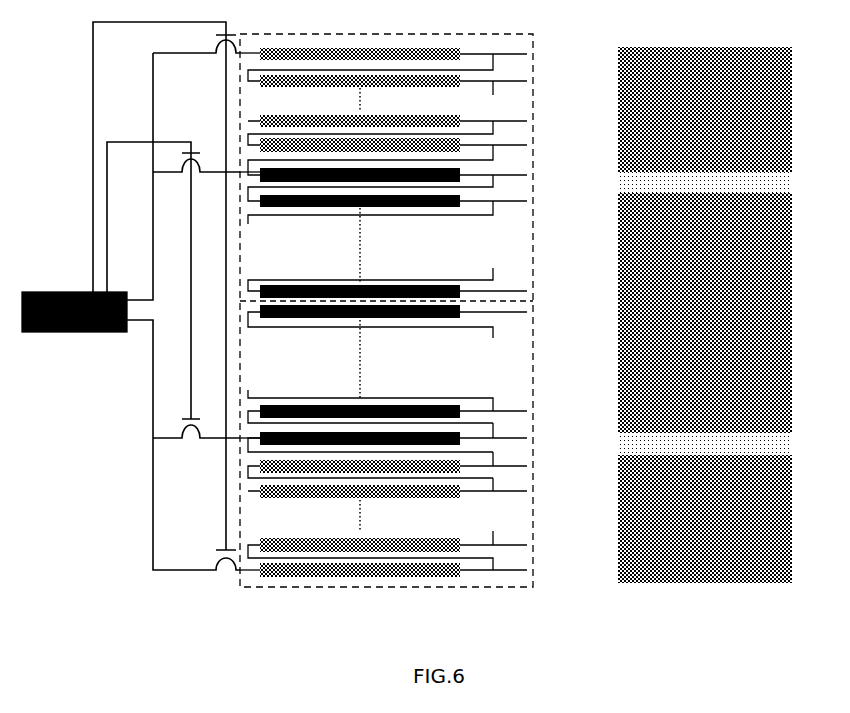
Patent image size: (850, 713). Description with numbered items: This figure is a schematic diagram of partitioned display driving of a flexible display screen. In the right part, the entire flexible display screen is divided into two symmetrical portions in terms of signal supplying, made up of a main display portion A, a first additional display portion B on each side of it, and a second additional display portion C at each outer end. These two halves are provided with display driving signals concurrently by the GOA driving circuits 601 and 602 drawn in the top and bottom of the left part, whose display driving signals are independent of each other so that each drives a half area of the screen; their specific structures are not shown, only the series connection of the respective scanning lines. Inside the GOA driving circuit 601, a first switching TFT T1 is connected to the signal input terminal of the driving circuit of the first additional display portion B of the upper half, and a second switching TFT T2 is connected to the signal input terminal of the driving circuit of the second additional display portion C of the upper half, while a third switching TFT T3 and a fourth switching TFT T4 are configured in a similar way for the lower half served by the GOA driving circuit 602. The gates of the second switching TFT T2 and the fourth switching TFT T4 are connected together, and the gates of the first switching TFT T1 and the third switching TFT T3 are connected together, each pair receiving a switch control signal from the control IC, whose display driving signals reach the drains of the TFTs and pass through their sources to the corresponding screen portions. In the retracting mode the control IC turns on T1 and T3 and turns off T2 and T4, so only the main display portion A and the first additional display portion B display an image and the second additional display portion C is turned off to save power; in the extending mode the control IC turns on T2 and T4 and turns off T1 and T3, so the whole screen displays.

The GOA driving circuit 601 is at (533, 110).
The GOA driving circuit 602 is at (533, 383).
The control IC is at (74, 312).
The first switching TFT T1 is at (228, 185).
The second switching TFT T2 is at (227, 66).
The third switching TFT T3 is at (217, 455).
The fourth switching TFT T4 is at (221, 556).
The main display portion A is at (714, 313).
The first additional display portion B is at (714, 315).
The second additional display portion C is at (714, 315).